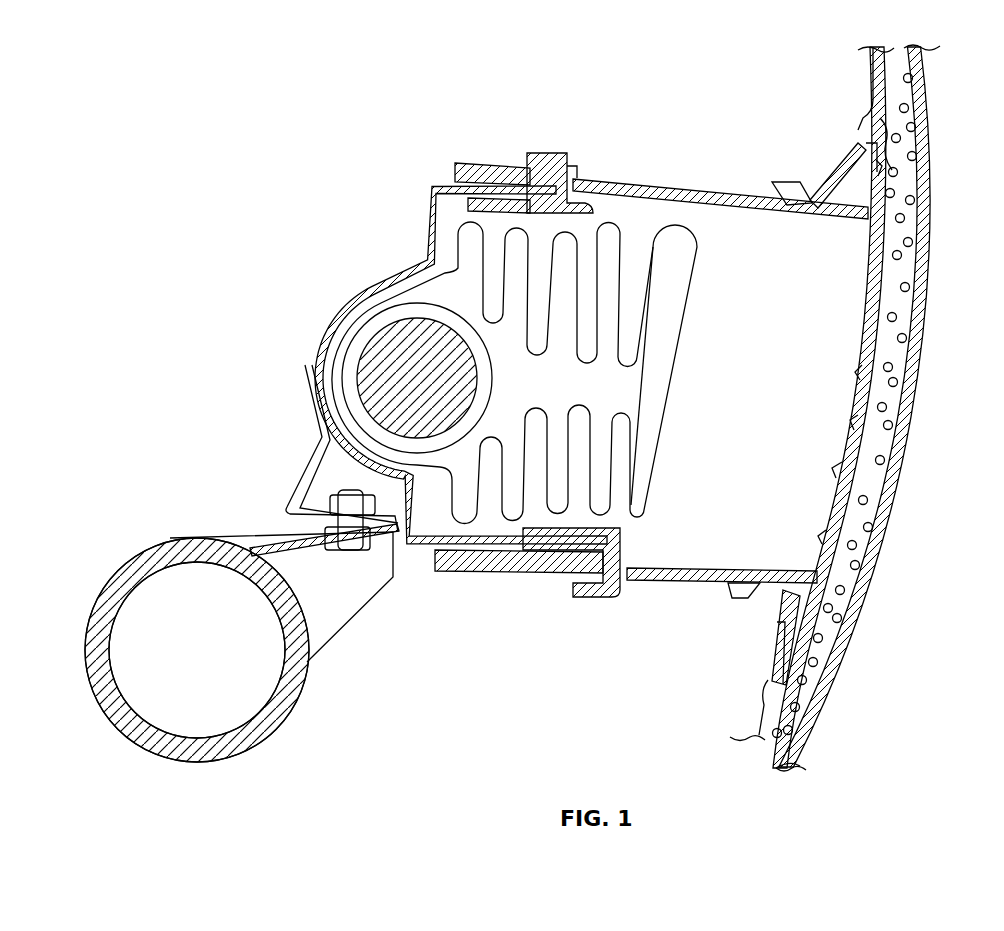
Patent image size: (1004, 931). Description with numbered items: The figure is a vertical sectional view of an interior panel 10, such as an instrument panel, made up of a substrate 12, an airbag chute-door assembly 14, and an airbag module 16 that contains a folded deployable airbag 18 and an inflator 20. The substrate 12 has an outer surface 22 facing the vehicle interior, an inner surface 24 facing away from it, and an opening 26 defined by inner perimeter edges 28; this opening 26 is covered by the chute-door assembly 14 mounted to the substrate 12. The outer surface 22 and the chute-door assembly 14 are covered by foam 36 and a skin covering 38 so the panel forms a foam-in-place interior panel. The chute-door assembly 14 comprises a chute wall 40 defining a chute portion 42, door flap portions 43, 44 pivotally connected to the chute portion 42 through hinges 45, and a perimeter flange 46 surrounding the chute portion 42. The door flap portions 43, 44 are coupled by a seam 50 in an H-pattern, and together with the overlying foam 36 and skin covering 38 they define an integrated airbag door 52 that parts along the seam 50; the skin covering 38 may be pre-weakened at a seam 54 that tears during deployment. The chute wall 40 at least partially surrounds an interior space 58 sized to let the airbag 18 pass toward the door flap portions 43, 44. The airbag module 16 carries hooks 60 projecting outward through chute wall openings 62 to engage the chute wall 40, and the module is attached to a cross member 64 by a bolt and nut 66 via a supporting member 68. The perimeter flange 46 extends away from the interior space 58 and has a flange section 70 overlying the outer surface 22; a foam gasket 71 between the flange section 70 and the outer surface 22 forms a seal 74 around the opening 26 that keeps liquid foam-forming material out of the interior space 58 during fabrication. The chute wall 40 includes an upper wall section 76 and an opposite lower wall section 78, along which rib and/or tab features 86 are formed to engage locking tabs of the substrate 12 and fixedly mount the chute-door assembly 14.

The interior panel 10 is at (328, 78).
The substrate 12 is at (760, 682).
The airbag chute-door assembly 14 is at (752, 203).
The airbag module 16 is at (358, 300).
The deployable airbag 18 is at (688, 305).
The inflator 20 is at (358, 348).
The outer surface 22 is at (928, 80).
The inner surface 24 is at (868, 64).
The opening 26 is at (922, 292).
The inner perimeter edges 28 is at (850, 174).
The foam 36 is at (905, 368).
The skin covering 38 is at (925, 336).
The chute wall 40 is at (672, 185).
The chute portion 42 is at (673, 184).
The door flap portion 43 is at (866, 332).
The door flap portion 44 is at (840, 500).
The hinges 45 is at (905, 240).
The perimeter flange 46 is at (920, 205).
The seam 50 is at (860, 412).
The integrated airbag door 52 is at (905, 454).
The seam 54 is at (905, 412).
The interior space 58 is at (832, 450).
The hooks 60 is at (548, 155).
The chute wall openings 62 is at (573, 166).
The cross member 64 is at (118, 578).
The bolt and nut 66 is at (350, 552).
The supporting member 68 is at (312, 465).
The flange section 70 is at (908, 130).
The foam gasket 71 is at (860, 150).
The seal 74 is at (886, 165).
The upper wall section 76 is at (706, 186).
The lower wall section 78 is at (728, 600).
The rib and/or tab features 86 is at (786, 183).